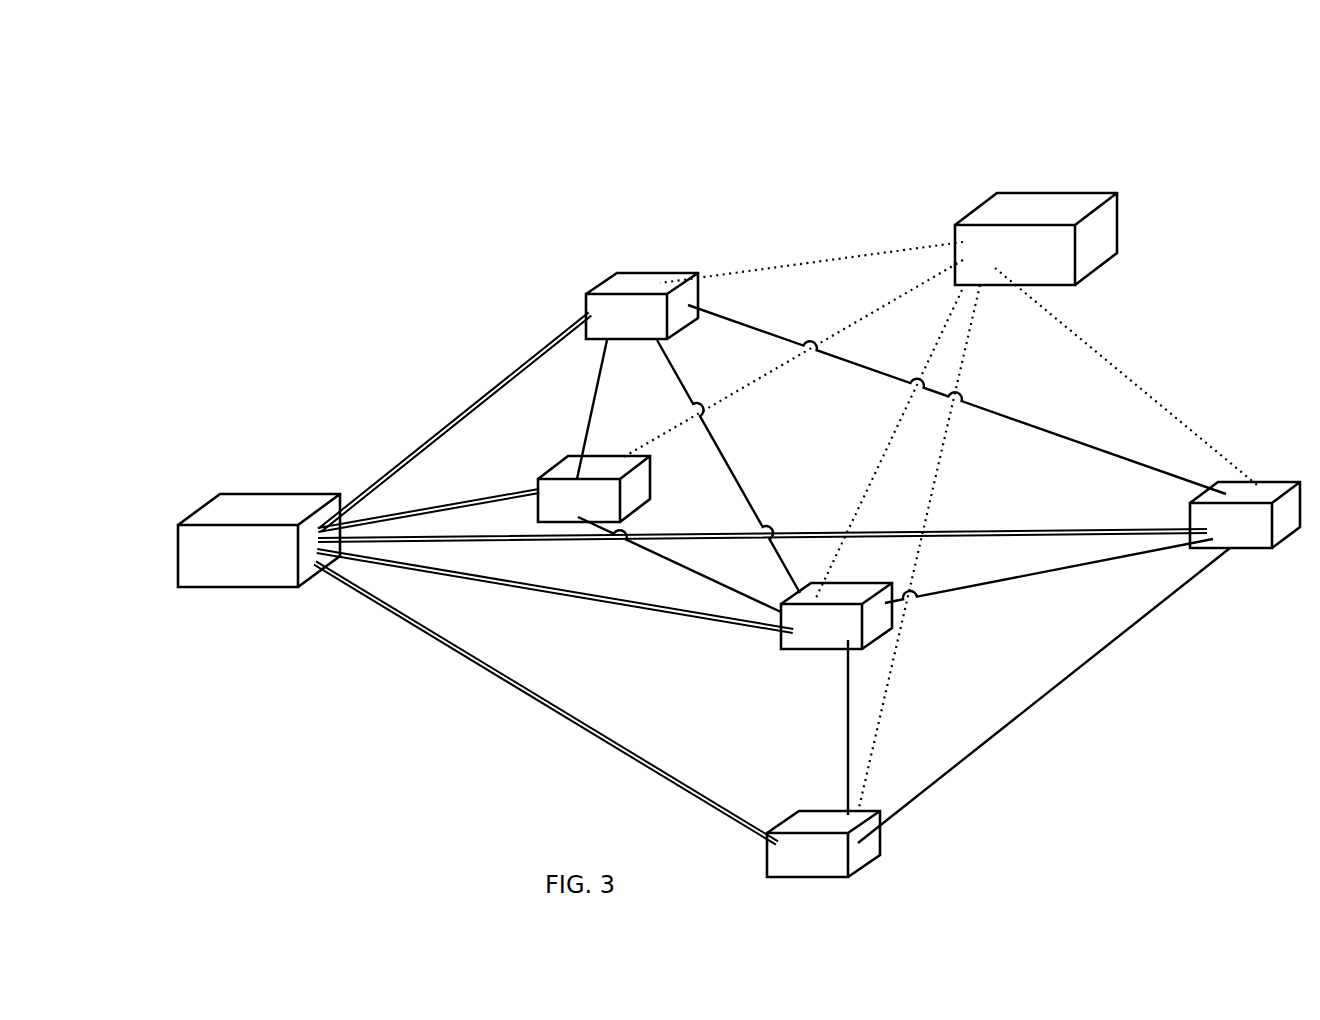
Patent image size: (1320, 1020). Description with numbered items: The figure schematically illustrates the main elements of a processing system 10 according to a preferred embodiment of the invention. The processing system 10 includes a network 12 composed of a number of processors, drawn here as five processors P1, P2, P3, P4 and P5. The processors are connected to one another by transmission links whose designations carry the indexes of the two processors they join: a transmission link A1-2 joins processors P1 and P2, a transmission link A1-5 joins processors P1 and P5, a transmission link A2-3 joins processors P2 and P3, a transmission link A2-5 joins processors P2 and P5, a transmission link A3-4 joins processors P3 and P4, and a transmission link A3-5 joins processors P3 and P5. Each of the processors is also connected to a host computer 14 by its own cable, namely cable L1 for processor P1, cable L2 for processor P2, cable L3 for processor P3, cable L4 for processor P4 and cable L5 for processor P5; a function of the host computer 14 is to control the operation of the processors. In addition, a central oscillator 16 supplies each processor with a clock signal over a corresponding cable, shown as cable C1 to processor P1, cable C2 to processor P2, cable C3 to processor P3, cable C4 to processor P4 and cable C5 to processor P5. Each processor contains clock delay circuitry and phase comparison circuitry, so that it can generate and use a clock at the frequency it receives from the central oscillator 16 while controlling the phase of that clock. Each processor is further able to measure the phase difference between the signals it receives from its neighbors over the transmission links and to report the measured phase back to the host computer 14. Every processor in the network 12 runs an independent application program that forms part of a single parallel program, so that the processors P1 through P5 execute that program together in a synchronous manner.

The processing system 10 is at (988, 140).
The network 12 is at (560, 209).
The host computer 14 is at (219, 568).
The central oscillator 16 is at (1002, 265).
The processor P1 is at (563, 512).
The processor P2 is at (648, 330).
The processor P3 is at (1222, 539).
The processor P4 is at (824, 867).
The processor P5 is at (838, 640).
The cable L1 is at (504, 497).
The cable L2 is at (434, 434).
The cable L3 is at (510, 547).
The cable L4 is at (550, 708).
The cable L5 is at (549, 592).
The cable C1 is at (870, 313).
The cable C2 is at (820, 262).
The cable C3 is at (1105, 362).
The cable C4 is at (972, 330).
The cable C5 is at (888, 444).
The transmission link A1-2 is at (605, 355).
The transmission link A1-5 is at (700, 577).
The transmission link A2-3 is at (1055, 437).
The transmission link A2-5 is at (750, 500).
The transmission link A3-4 is at (1075, 672).
The transmission link A3-5 is at (1045, 575).